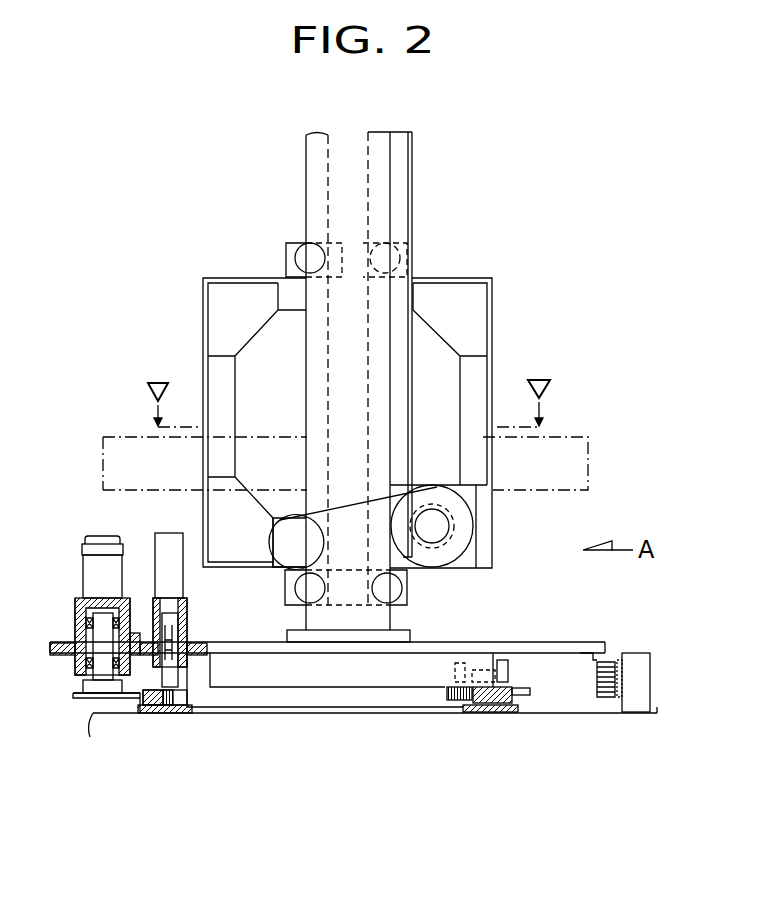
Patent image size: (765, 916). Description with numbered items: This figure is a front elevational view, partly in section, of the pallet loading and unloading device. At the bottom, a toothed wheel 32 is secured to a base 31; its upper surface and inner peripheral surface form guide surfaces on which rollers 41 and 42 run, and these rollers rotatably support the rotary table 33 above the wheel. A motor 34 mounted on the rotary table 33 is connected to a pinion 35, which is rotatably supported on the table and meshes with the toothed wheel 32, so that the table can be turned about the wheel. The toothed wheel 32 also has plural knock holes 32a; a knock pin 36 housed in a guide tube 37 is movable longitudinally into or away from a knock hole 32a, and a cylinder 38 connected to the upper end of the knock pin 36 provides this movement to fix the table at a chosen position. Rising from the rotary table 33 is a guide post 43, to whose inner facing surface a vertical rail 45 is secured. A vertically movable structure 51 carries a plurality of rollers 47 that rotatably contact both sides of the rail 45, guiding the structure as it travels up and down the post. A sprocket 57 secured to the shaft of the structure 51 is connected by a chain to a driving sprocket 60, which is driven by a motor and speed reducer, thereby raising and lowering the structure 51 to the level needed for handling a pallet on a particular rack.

The base 31 is at (656, 736).
The toothed wheel 32 is at (522, 693).
The knock hole 32a is at (172, 713).
The rotary table 33 is at (342, 677).
The motor 34 is at (93, 578).
The pinion 35 is at (72, 694).
The knock pin 36 is at (172, 675).
The guide tube 37 is at (183, 624).
The cylinder 38 is at (175, 580).
The roller 41 is at (508, 670).
The roller 42 is at (458, 698).
The guide post 43 is at (380, 215).
The vertical rail 45 is at (387, 170).
The roller 47 is at (286, 255).
The vertically movable structure 51 is at (492, 317).
The sprocket 57 is at (445, 529).
The driving sprocket 60 is at (272, 545).